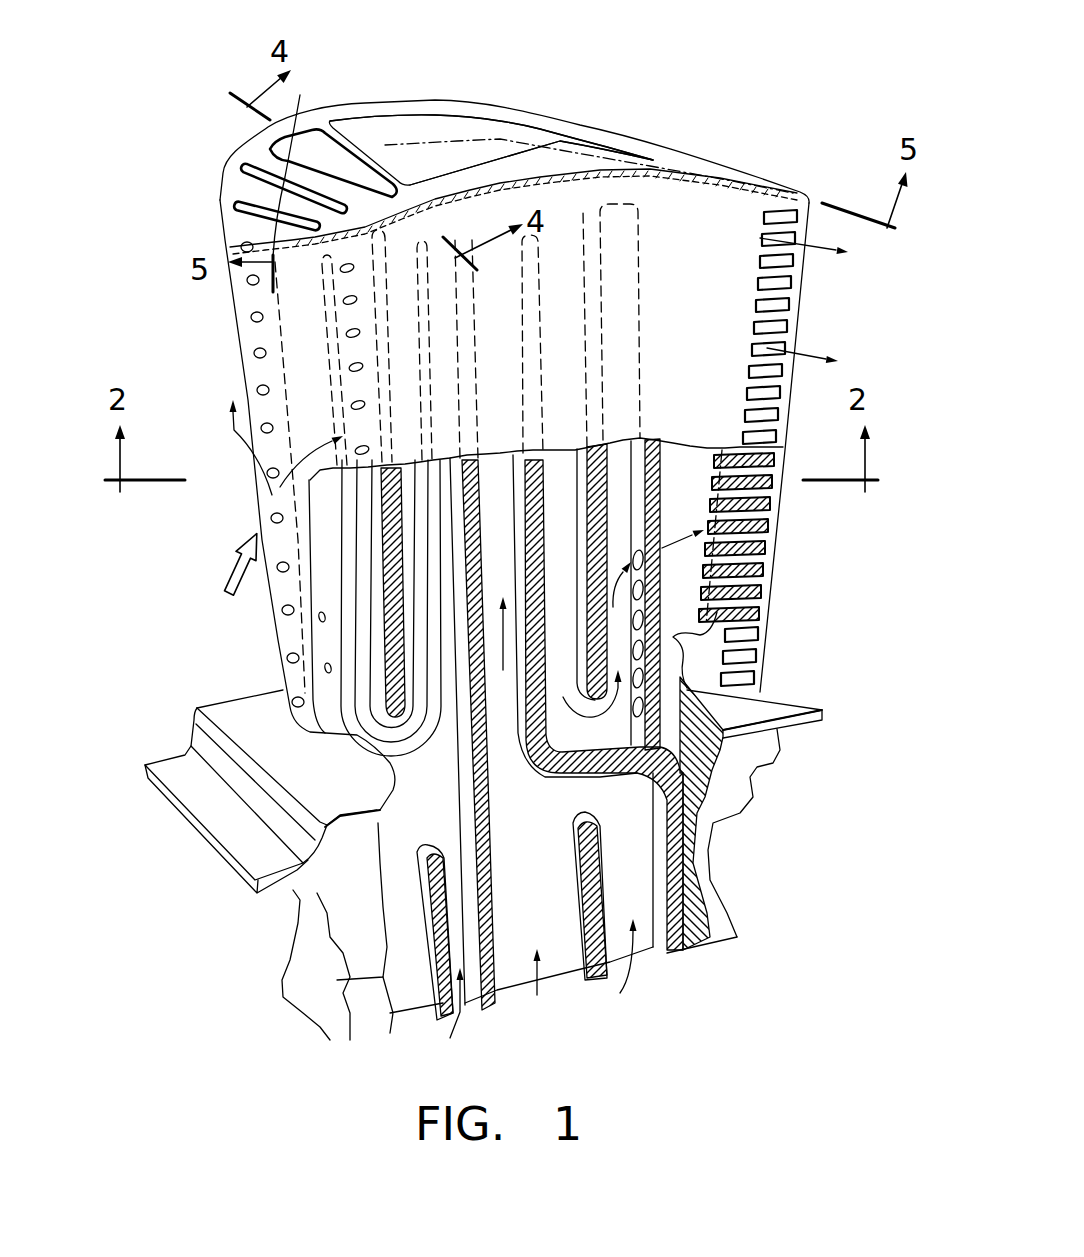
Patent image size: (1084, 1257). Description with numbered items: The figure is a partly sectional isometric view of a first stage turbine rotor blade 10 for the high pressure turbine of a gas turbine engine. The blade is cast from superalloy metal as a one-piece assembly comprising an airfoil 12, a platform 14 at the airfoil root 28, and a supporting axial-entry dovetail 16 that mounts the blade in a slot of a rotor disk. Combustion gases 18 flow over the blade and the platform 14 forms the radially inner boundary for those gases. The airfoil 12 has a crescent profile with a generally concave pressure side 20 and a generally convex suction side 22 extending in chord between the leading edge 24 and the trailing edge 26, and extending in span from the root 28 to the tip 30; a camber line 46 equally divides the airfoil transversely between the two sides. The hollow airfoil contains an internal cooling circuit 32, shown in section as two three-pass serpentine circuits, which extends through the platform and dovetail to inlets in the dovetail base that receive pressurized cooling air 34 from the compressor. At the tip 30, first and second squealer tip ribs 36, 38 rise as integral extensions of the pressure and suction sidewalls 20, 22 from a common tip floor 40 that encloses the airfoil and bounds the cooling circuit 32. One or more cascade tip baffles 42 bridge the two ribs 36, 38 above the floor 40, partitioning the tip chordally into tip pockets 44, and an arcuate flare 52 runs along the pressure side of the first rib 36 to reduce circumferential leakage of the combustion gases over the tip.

The turbine rotor blade 10 is at (155, 280).
The airfoil 12 is at (815, 178).
The platform 14 is at (222, 706).
The dovetail 16 is at (293, 927).
The combustion gases 18 is at (227, 558).
The pressure side 20 is at (515, 317).
The suction side 22 is at (287, 637).
The leading edge 24 is at (273, 332).
The trailing edge 26 is at (800, 322).
The airfoil root 28 is at (337, 741).
The tip 30 is at (648, 128).
The internal cooling circuit 32 is at (545, 817).
The cooling air 34 is at (537, 995).
The first squealer tip rib 36 is at (560, 163).
The second squealer tip rib 38 is at (520, 117).
The tip floor 40 is at (457, 142).
The tip baffle 42 is at (252, 142).
The tip pocket 44 is at (307, 145).
The camber line 46 is at (476, 138).
The arcuate flare 52 is at (655, 188).